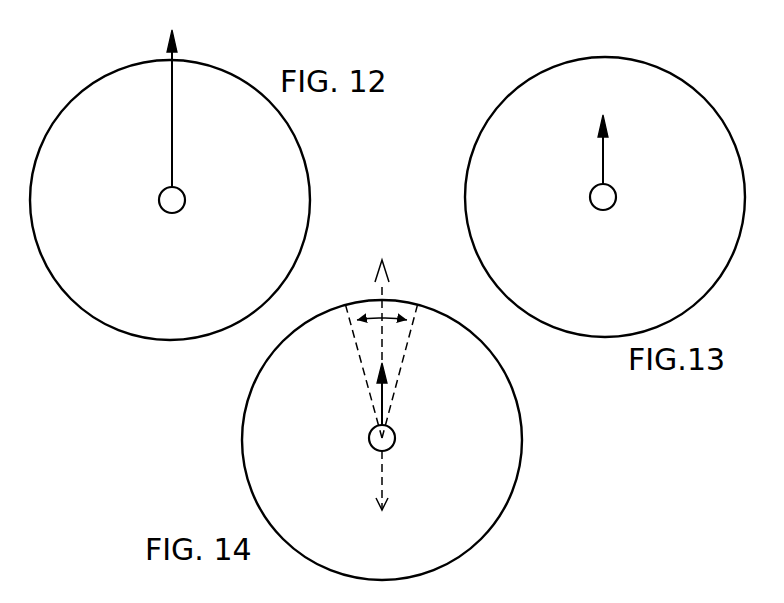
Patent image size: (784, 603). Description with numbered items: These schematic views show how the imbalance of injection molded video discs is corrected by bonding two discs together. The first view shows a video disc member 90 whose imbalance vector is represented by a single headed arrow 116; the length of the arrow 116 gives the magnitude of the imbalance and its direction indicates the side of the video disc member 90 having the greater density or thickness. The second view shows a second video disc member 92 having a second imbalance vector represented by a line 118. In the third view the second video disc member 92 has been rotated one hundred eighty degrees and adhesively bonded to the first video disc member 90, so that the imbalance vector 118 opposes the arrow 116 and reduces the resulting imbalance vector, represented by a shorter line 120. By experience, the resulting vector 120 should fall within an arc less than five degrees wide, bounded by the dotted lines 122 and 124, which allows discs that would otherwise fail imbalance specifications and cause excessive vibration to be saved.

In FIG. 12, the video disc member 90 is at (307, 160).
In FIG. 13, the second video disc member 92 is at (465, 197).
In FIG. 12, the single headed arrow 116 is at (170, 115).
In FIG. 14, the single headed arrow 116 is at (387, 285).
In FIG. 13, the line 118 is at (603, 158).
In FIG. 14, the line 118 is at (384, 475).
In FIG. 14, the line 120 is at (378, 400).
In FIG. 14, the dotted line 122 is at (352, 320).
In FIG. 14, the dotted line 124 is at (412, 319).